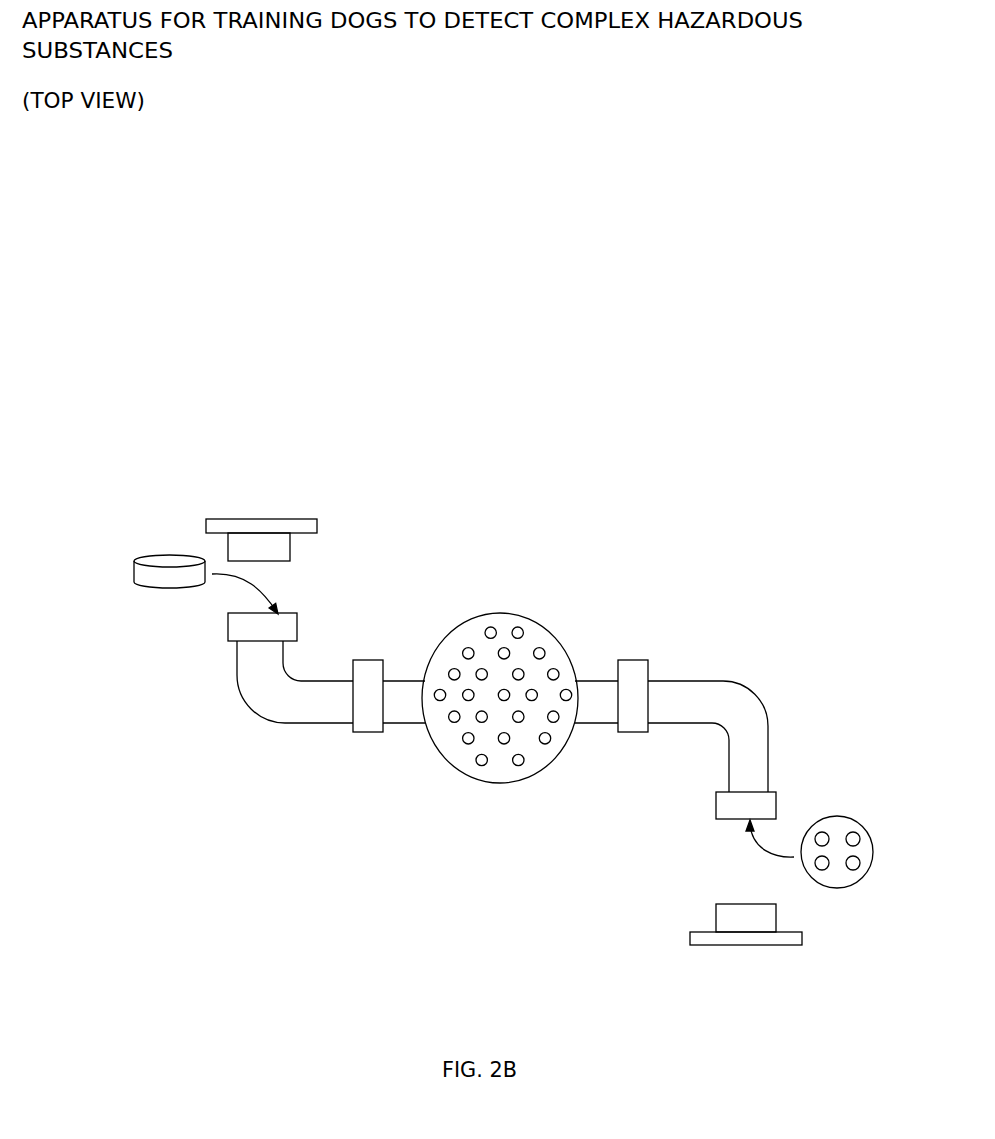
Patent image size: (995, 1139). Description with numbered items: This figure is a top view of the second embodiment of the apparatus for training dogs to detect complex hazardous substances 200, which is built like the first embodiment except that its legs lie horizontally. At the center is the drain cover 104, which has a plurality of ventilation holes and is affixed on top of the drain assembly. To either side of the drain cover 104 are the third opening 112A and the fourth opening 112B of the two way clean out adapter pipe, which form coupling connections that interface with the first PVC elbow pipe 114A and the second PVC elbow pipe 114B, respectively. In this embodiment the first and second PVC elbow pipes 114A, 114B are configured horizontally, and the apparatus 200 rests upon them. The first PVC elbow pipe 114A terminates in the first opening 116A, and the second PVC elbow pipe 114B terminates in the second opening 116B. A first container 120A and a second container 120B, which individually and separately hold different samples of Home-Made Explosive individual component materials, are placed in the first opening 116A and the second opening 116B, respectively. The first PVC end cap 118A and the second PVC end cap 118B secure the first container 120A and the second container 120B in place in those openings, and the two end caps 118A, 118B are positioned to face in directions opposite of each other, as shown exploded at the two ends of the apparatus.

The apparatus for training dogs to detect complex hazardous substances 200 is at (483, 520).
The drain cover 104 is at (558, 628).
The third opening 112A is at (393, 732).
The fourth opening 112B is at (608, 732).
The first PVC elbow pipe 114A is at (283, 731).
The second PVC elbow pipe 114B is at (737, 679).
The first opening 116A is at (302, 613).
The second opening 116B is at (783, 819).
The first PVC end cap 118A is at (250, 510).
The second PVC end cap 118B is at (750, 958).
The first container 120A is at (133, 595).
The second container 120B is at (875, 873).